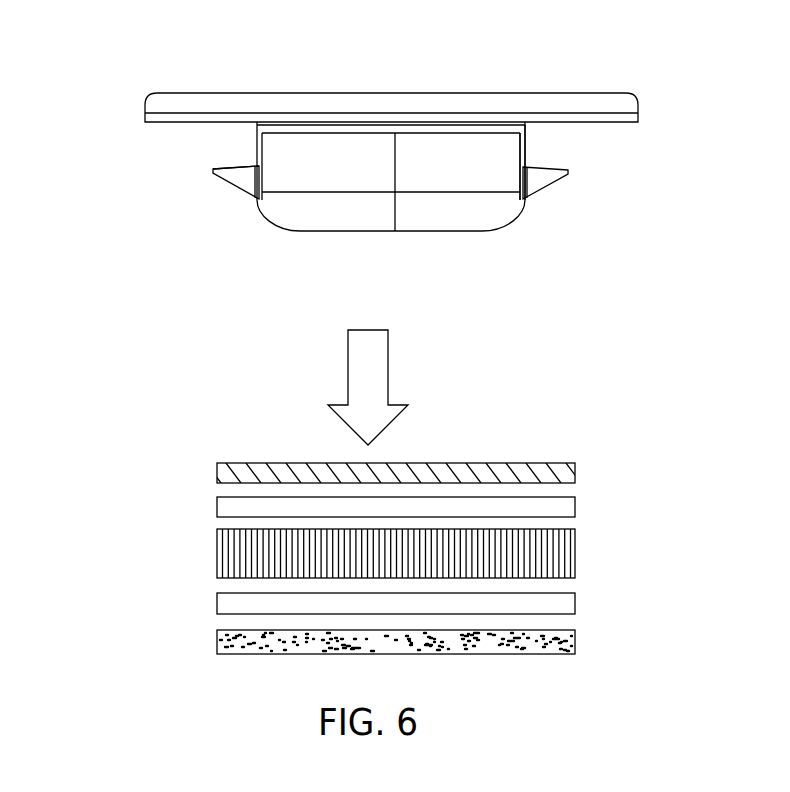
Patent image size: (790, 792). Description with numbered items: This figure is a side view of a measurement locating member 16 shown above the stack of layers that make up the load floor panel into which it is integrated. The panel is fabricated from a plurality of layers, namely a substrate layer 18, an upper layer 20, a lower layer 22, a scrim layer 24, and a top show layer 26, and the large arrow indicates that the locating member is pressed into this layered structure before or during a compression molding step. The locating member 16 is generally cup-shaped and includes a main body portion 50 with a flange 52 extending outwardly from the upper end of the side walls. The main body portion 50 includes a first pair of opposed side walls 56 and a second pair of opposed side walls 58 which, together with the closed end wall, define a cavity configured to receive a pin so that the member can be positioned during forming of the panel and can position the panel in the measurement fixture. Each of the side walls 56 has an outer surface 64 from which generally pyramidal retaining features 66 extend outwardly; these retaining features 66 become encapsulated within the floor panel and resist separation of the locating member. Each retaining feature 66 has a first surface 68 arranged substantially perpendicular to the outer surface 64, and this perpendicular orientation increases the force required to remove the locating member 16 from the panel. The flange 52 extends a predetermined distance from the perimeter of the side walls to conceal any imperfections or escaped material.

The measurement locating member 16 is at (630, 66).
The substrate layer 18 is at (217, 558).
The upper layer 20 is at (217, 608).
The lower layer 22 is at (217, 512).
The scrim layer 24 is at (217, 478).
The top show layer 26 is at (217, 645).
The main body portion 50 is at (349, 250).
The flange 52 is at (128, 104).
The first pair of opposed side walls 56 is at (554, 120).
The second pair of opposed side walls 58 is at (420, 178).
The outer surface 64 is at (528, 144).
The retaining feature 66 is at (235, 212).
The first surface 68 is at (242, 168).